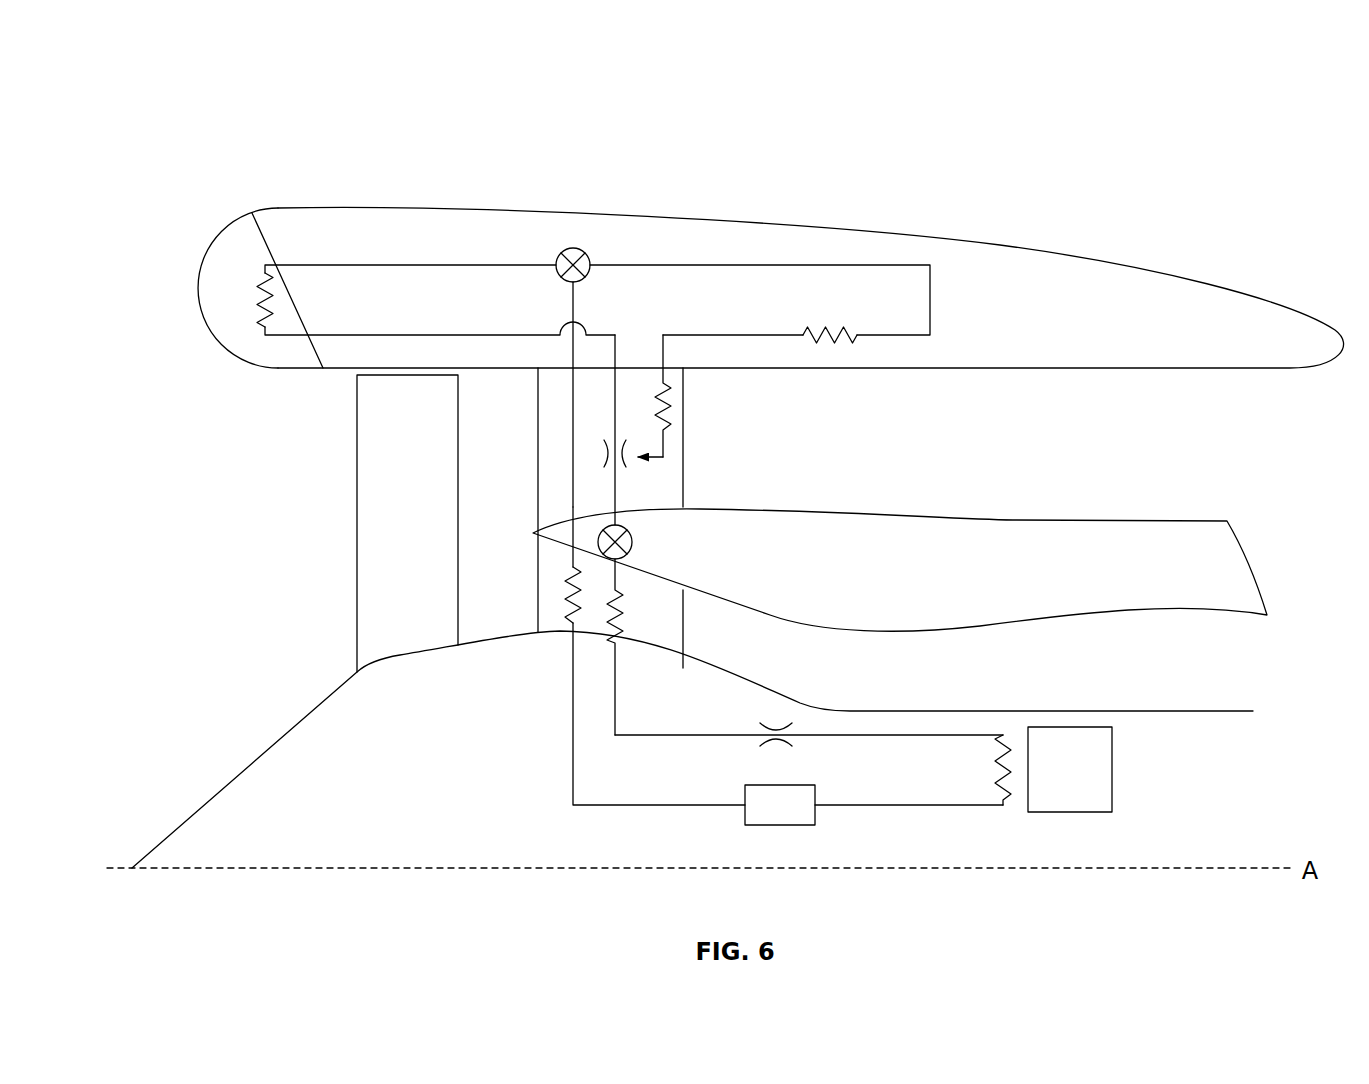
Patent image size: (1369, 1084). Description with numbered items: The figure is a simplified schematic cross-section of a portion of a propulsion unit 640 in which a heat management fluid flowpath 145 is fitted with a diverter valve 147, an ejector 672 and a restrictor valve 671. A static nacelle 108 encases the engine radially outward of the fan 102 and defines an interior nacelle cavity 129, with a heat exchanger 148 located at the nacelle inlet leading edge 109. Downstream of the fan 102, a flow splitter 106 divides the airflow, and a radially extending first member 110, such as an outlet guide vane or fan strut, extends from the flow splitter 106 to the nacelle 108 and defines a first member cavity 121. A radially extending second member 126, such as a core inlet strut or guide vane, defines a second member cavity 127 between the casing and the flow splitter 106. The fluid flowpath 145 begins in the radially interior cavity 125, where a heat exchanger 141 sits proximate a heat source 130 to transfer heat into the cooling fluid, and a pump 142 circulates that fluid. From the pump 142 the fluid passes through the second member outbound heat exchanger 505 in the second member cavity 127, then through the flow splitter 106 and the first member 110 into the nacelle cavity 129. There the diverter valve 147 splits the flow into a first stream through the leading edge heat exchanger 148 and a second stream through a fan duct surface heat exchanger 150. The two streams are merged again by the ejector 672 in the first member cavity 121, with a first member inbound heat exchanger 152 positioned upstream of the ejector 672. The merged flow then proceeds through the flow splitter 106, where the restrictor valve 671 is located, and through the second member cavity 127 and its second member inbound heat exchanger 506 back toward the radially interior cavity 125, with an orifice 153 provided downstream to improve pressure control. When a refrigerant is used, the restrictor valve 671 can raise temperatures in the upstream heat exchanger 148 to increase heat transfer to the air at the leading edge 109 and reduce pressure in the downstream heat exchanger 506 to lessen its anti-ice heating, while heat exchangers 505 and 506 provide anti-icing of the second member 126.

The propulsion unit portion 640 is at (150, 78).
The nacelle 108 is at (280, 207).
The nacelle inlet leading edge 109 is at (188, 286).
The nacelle cavity 129 is at (1125, 326).
The diverter valve 147 is at (576, 236).
The heat exchanger 148 is at (246, 323).
The fan duct surface heat exchanger 150 is at (841, 353).
The first member inbound heat exchanger 152 is at (677, 415).
The ejector 672 is at (661, 469).
The first member 110 is at (538, 457).
The fan 102 is at (385, 537).
The first member cavity 121 is at (561, 496).
The second member cavity 127 is at (561, 561).
The second member outbound heat exchanger 505 is at (561, 591).
The second member inbound heat exchanger 506 is at (601, 619).
The restrictor valve 671 is at (646, 543).
The second member 126 is at (683, 610).
The flow splitter 106 is at (1025, 576).
The radially interior cavity 125 is at (408, 804).
The fluid flowpath 145 is at (573, 715).
The orifice 153 is at (771, 751).
The pump 142 is at (758, 820).
The heat exchanger 141 is at (986, 767).
The heat source 130 is at (1048, 782).